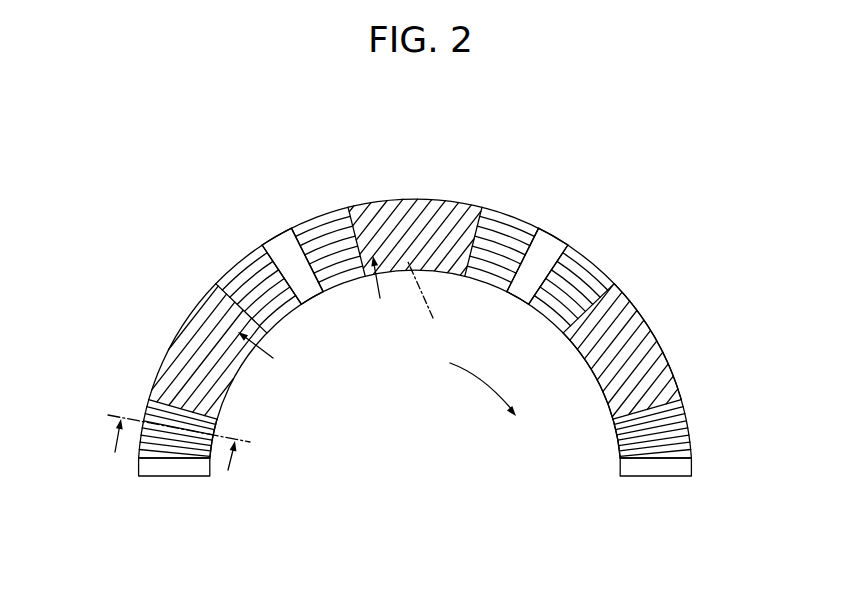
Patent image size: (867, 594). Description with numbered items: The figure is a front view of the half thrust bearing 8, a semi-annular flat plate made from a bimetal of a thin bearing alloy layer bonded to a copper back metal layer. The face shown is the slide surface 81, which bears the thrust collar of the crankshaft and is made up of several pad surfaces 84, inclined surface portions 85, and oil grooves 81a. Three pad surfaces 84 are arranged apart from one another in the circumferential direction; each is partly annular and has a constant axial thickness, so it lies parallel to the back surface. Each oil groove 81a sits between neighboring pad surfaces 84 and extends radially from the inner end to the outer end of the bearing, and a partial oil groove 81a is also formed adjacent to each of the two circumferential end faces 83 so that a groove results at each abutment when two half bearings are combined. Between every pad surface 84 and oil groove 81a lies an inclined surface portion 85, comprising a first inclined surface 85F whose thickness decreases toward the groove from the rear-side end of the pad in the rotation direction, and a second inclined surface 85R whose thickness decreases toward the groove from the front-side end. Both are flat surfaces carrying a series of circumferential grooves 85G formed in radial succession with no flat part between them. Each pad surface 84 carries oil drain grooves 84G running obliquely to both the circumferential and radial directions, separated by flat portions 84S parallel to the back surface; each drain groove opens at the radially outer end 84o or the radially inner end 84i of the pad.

The half thrust bearing 8 is at (620, 150).
The slide surface 81 is at (605, 397).
The oil groove 81a is at (287, 250).
The circumferential end face 83 is at (158, 478).
The pad surface 84 is at (423, 281).
The oil drain groove 84G is at (408, 235).
The flat portion 84S is at (357, 203).
The radially inner end 84i is at (580, 352).
The radially outer end 84o is at (635, 300).
The inclined surface portion 85 is at (421, 319).
The first inclined surface 85F is at (315, 218).
The second inclined surface 85R is at (257, 268).
The circumferential groove 85G is at (205, 428).